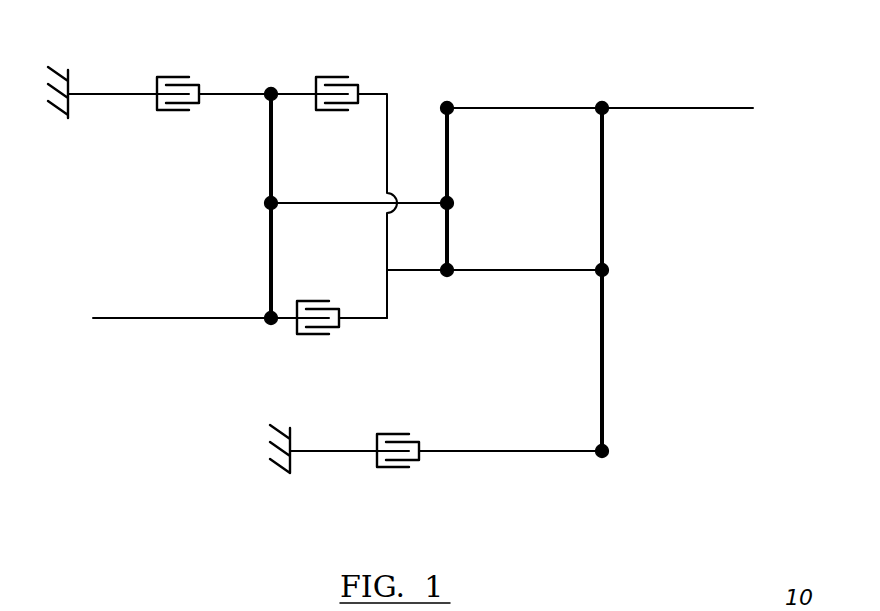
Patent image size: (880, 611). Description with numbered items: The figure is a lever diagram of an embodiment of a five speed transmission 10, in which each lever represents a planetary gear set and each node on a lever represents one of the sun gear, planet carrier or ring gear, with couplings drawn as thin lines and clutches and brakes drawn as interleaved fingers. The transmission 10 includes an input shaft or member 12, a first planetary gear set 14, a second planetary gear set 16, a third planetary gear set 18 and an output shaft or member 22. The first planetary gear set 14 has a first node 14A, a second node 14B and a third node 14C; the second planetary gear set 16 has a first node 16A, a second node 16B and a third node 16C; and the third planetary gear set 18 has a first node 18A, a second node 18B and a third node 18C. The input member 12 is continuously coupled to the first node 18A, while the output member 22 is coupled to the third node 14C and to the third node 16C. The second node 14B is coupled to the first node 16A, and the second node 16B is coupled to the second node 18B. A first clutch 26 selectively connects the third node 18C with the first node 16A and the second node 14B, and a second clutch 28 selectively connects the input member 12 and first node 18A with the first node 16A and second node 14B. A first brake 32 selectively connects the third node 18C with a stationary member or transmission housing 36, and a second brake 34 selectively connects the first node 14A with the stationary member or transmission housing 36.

The five speed transmission 10 is at (686, 56).
The input shaft or member 12 is at (150, 320).
The first planetary gear set 14 is at (598, 475).
The first node of the first planetary gear set 14A is at (608, 448).
The second node of the first planetary gear set 14B is at (608, 268).
The third node of the first planetary gear set 14C is at (602, 102).
The second planetary gear set 16 is at (462, 290).
The first node of the second planetary gear set 16A is at (445, 276).
The second node of the second planetary gear set 16B is at (454, 199).
The third node of the second planetary gear set 16C is at (447, 102).
The third planetary gear set 18 is at (262, 348).
The first node of the third planetary gear set 18A is at (273, 322).
The second node of the third planetary gear set 18B is at (265, 204).
The third node of the third planetary gear set 18C is at (271, 88).
The output shaft or member 22 is at (723, 110).
The first clutch 26 is at (340, 77).
The second clutch 28 is at (303, 300).
The first brake 32 is at (178, 77).
The second brake 34 is at (396, 469).
The stationary member or transmission housing 36 is at (56, 65).